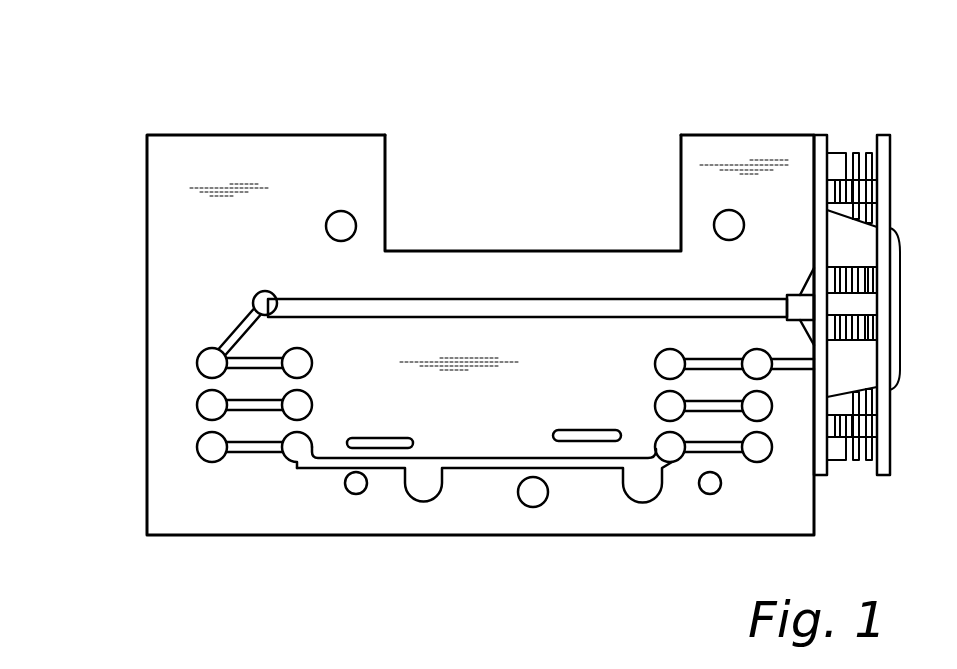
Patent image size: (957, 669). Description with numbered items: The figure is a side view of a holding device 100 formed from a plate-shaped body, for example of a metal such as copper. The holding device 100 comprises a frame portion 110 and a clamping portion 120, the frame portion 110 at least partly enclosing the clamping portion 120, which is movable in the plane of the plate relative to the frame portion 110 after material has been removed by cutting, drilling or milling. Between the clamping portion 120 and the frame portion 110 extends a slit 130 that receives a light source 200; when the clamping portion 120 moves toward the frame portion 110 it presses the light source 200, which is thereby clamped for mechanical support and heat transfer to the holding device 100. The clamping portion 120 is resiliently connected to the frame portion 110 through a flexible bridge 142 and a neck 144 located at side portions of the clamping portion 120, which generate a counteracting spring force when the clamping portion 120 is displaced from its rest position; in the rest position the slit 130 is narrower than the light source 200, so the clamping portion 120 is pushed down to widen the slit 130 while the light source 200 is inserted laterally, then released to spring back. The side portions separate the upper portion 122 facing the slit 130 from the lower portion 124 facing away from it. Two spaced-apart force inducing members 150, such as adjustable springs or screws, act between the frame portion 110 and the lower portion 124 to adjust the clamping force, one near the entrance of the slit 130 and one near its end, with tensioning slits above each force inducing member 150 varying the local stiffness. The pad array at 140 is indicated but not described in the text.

The holding device 100 is at (165, 76).
The frame portion 110 is at (147, 262).
The clamping portion 120 is at (417, 468).
The upper portion 122 is at (468, 315).
The lower portion 124 is at (493, 462).
The slit 130 is at (416, 272).
The contact pad array 140 is at (160, 384).
The flexible bridge 142 is at (238, 452).
The neck 144 is at (207, 438).
The force inducing member 150 is at (371, 466).
The light source 200 is at (578, 303).